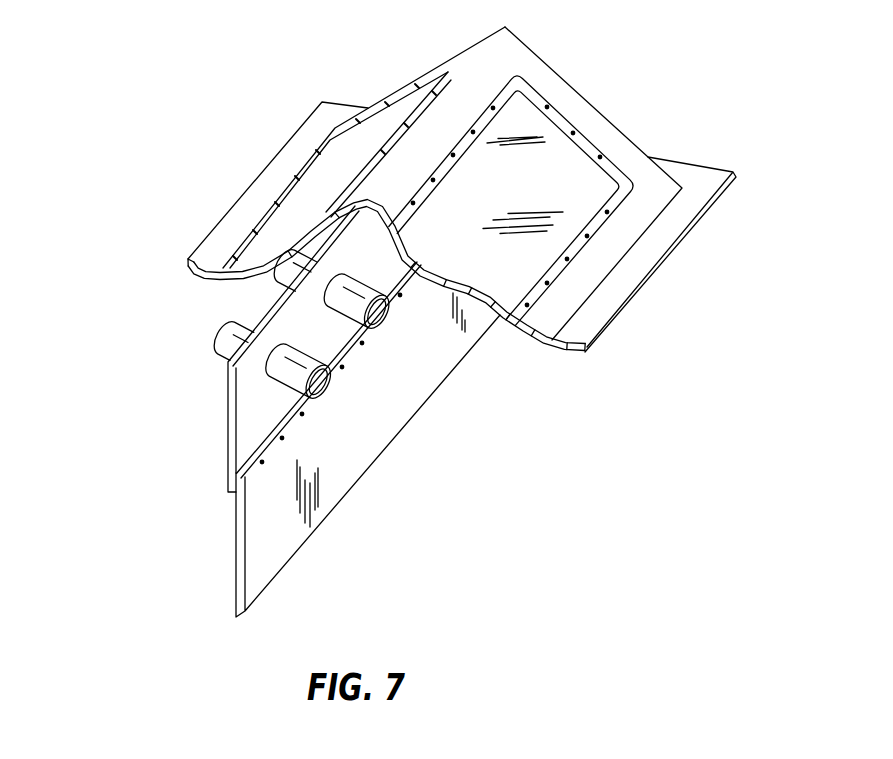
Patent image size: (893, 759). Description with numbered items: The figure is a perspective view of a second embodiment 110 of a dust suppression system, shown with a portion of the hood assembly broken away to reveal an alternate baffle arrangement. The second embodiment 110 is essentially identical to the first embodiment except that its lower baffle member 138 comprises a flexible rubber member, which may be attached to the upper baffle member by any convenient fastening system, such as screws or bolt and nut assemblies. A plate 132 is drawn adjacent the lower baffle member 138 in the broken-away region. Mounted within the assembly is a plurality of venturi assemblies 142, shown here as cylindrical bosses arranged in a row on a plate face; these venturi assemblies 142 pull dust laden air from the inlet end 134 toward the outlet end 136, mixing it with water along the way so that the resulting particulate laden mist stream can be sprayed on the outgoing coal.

The second embodiment of the dust suppression system 110 is at (140, 116).
The first plate 132 is at (228, 460).
The inlet end 134 is at (190, 358).
The outlet end 136 is at (526, 406).
The lower baffle member 138 is at (236, 545).
The venturi assemblies 142 is at (384, 324).